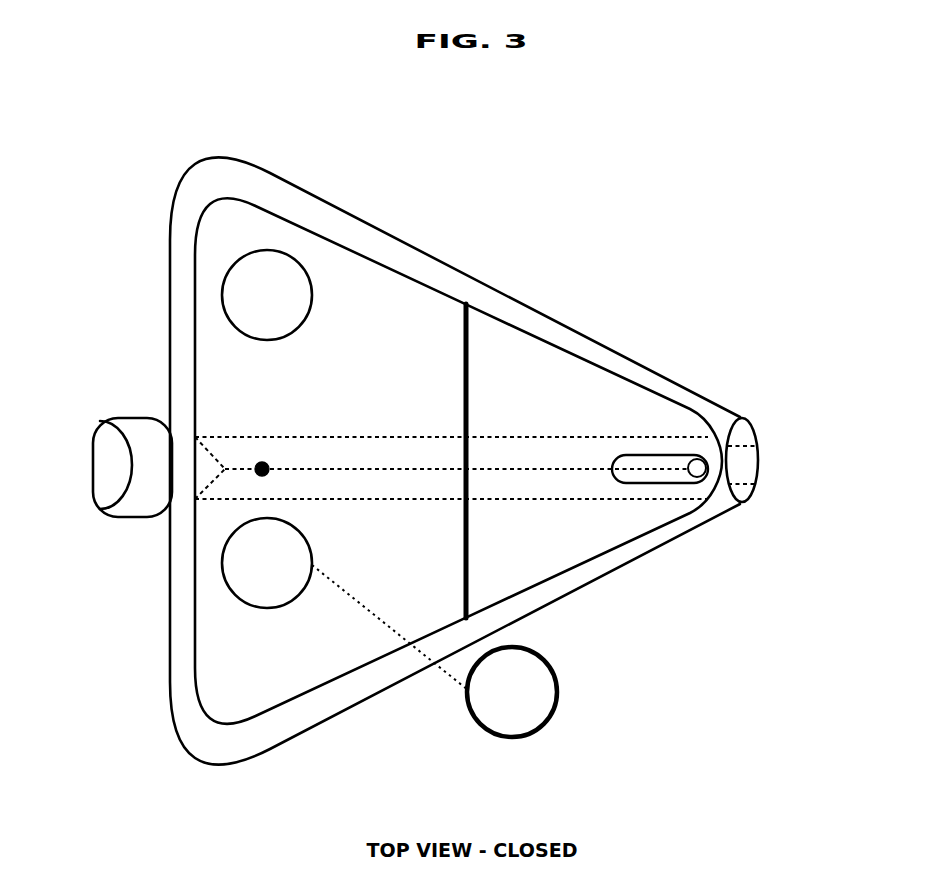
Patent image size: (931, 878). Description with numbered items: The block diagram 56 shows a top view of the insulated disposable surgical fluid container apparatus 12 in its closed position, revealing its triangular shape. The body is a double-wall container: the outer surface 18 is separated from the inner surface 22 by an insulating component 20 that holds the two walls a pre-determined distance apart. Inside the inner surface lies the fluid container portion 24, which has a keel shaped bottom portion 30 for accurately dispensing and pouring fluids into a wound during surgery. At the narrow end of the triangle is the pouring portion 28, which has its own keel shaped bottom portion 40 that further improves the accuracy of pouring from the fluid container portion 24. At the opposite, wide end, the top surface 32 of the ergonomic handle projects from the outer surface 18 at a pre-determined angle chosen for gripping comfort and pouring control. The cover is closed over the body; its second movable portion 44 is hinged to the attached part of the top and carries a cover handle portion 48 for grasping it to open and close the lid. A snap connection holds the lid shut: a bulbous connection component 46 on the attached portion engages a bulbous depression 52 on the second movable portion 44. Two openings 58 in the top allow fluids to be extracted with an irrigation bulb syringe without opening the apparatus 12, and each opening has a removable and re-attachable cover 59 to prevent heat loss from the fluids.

The block diagram 56 is at (687, 109).
The insulated disposable surgical fluid container apparatus 12 is at (464, 217).
The outer surface 18 is at (348, 717).
The insulating component 20 is at (209, 752).
The inner surface 22 is at (350, 671).
The fluid container portion 24 is at (523, 399).
The pouring portion 28 is at (748, 421).
The keel shaped bottom portion 30 is at (344, 495).
The top surface 32 is at (124, 418).
The keel shaped bottom portion of the pouring portion 40 is at (745, 463).
The second movable portion 44 is at (319, 364).
The connection component 46 is at (262, 462).
The cover handle portion 48 is at (612, 468).
The bulbous depression 52 is at (697, 478).
The opening 58 is at (250, 306).
The removable/re-attachable cover 59 is at (498, 702).